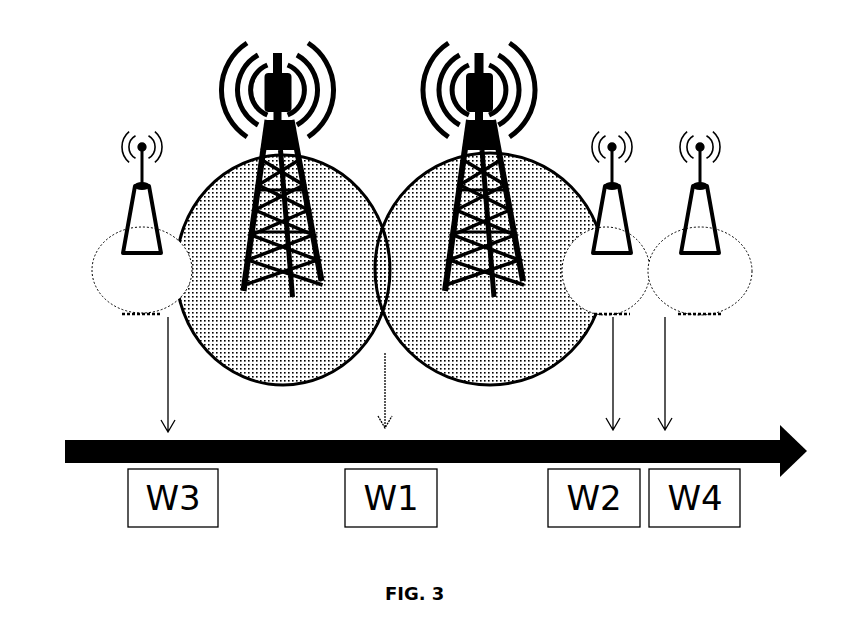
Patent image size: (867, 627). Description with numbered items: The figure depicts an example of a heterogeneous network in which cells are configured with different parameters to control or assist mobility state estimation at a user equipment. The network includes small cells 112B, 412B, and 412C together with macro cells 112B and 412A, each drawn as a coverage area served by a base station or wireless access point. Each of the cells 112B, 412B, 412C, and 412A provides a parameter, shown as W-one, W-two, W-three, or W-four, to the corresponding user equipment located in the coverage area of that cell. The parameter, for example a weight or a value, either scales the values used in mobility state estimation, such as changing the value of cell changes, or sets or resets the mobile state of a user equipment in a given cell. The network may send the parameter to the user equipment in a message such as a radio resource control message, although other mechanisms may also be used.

The cell 112B is at (110, 296).
The macro cell 412A is at (437, 372).
The small cell 412B is at (640, 235).
The small cell 412C is at (742, 308).